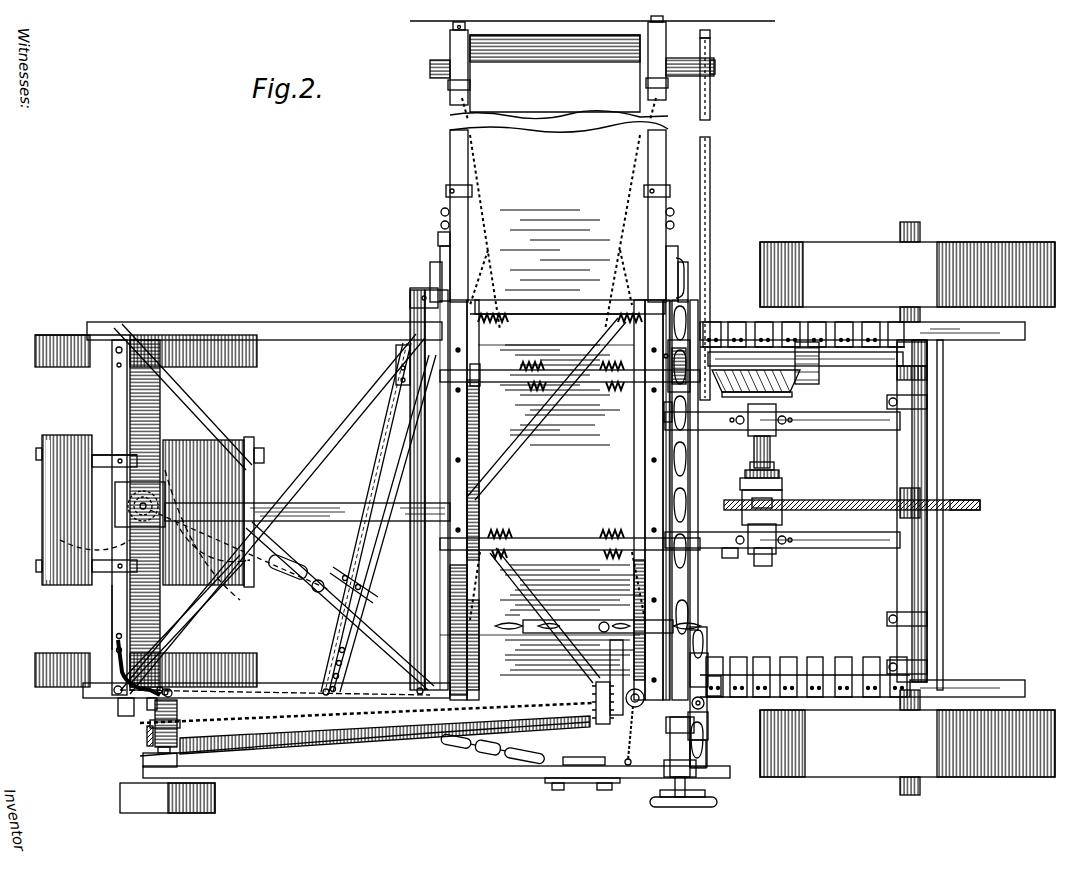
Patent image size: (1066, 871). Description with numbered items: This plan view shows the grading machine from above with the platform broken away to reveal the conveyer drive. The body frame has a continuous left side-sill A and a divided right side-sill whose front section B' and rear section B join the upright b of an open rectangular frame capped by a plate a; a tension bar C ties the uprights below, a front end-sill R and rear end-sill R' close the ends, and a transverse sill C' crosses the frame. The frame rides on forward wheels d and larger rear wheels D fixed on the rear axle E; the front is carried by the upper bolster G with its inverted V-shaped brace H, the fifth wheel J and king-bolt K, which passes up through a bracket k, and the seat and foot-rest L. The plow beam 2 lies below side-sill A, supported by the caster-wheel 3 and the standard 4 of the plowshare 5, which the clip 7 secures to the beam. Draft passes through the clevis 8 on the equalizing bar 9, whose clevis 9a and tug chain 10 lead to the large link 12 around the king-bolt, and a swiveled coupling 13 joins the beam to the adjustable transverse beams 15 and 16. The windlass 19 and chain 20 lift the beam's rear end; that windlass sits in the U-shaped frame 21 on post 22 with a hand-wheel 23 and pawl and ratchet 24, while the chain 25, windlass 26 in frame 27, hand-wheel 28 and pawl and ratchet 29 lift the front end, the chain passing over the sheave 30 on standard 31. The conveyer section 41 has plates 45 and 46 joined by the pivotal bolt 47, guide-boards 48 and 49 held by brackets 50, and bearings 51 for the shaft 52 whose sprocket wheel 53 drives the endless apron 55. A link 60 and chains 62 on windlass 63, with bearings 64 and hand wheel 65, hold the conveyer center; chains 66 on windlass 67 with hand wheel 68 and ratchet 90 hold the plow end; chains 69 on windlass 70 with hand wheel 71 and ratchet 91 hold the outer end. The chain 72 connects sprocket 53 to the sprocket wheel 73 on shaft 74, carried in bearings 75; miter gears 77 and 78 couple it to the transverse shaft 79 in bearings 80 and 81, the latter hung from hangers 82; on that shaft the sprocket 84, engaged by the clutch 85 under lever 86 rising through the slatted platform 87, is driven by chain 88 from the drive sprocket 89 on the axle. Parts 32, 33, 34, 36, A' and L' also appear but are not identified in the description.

The plow beam 2 is at (380, 770).
The caster-wheel 3 is at (122, 798).
The standard 4 is at (578, 766).
The plowshare 5 is at (542, 760).
The clip 7 is at (578, 758).
The clevis 8 is at (325, 690).
The equalizing bar 9 is at (372, 478).
The clevis 9a is at (370, 600).
The tug chain 10 is at (290, 572).
The large link 12 is at (206, 520).
The swiveled coupling 13 is at (410, 746).
The horizontal beam 15 is at (412, 615).
The horizontal beam 16 is at (660, 356).
The windlass 19 is at (612, 716).
The chain 20 is at (608, 766).
The U-shaped metal frame 21 is at (640, 710).
The vertical post 22 is at (708, 660).
The hand-wheel 23 is at (702, 708).
The pawl and ratchet 24 is at (716, 682).
The chain 25 is at (230, 722).
The windlass 26 is at (590, 660).
The U-shaped frame 27 is at (540, 643).
The hand-wheel 28 is at (580, 620).
The pawl and ratchet 29 is at (610, 618).
The sheave 30 is at (150, 740).
The standard 31 is at (172, 690).
The shaft block 32 is at (708, 742).
The shaft 33 is at (704, 766).
The support post 34 is at (664, 784).
The foot 36 is at (712, 800).
The conveyer section 41 is at (452, 145).
The plate 45 is at (446, 212).
The plate 46 is at (442, 250).
The pivotal bolt 47 is at (440, 238).
The guide-board 48 is at (470, 445).
The guide-board 49 is at (478, 200).
The brackets 50 is at (448, 190).
The longitudinally adjustable bearings 51 is at (456, 60).
The transverse shaft 52 is at (714, 68).
The sprocket wheel 53 is at (710, 40).
The endless apron 55 is at (559, 355).
The link 60 is at (442, 276).
The chains 62 is at (518, 290).
The windlass 63 is at (545, 312).
The bearings 64 is at (430, 326).
The hand wheel 65 is at (640, 310).
The chains 66 is at (636, 570).
The windlass 67 is at (582, 540).
The hand wheel 68 is at (688, 520).
The chains 69 is at (486, 290).
The windlass 70 is at (584, 382).
The hand wheel 71 is at (660, 394).
The chain 72 is at (711, 205).
The sprocket wheel 73 is at (705, 412).
The longitudinal shaft 74 is at (726, 352).
The bearings 75 is at (900, 362).
The miter gear 77 is at (812, 372).
The miter gear 78 is at (798, 392).
The transverse shaft 79 is at (766, 444).
The bearing 80 is at (740, 428).
The bearing 81 is at (740, 567).
The hangers 82 is at (862, 420).
The sprocket 84 is at (782, 500).
The clutch 85 is at (778, 484).
The lever 86 is at (778, 470).
The slatted platform 87 is at (868, 322).
The chain 88 is at (852, 500).
The drive sprocket 89 is at (966, 500).
The ratchet and pawl mechanism 90 is at (478, 538).
The ratchet and pawl mechanism 91 is at (478, 384).
The continuous side-sill A is at (967, 674).
The bottom beam left A' is at (266, 704).
The rear side-sill section B is at (862, 344).
The front side-sill section B' is at (264, 313).
The tension bar C is at (568, 528).
The transverse sill C' is at (698, 608).
The rear wheels D is at (907, 499).
The rear axle E is at (920, 790).
The upper bolster G is at (132, 388).
The inverted V-shaped brace H is at (150, 425).
The fifth wheel J is at (70, 515).
The king-bolt K is at (150, 508).
The seat and foot-rest L is at (50, 510).
The bracket L' is at (257, 499).
The front end-sill R is at (93, 617).
The rear end-sill R' is at (926, 534).
The plate a is at (556, 353).
The upright b is at (420, 338).
The forward wheels d is at (62, 338).
The bracket k is at (125, 515).